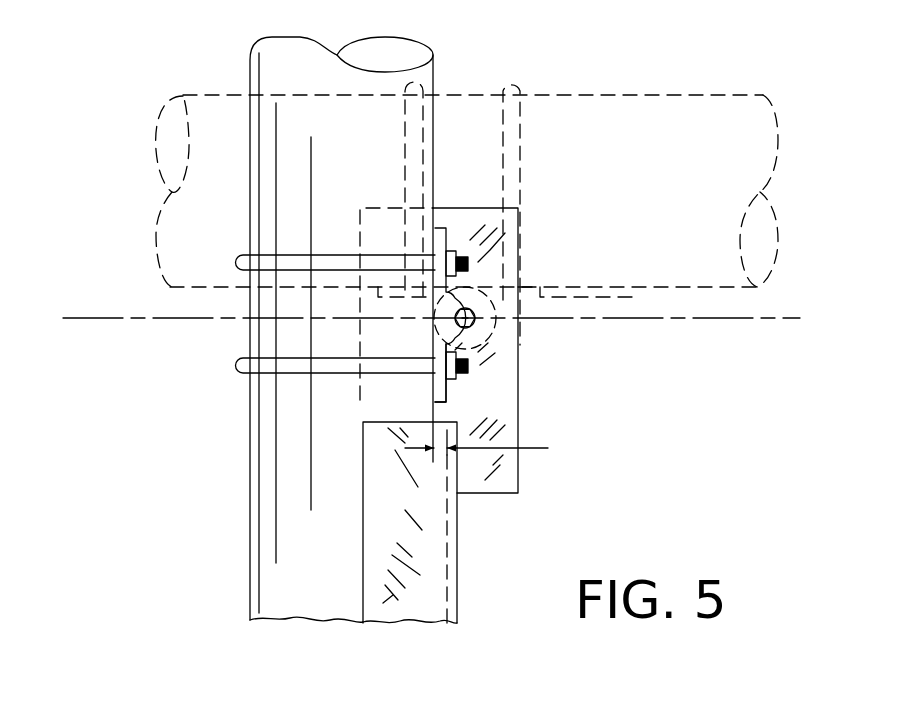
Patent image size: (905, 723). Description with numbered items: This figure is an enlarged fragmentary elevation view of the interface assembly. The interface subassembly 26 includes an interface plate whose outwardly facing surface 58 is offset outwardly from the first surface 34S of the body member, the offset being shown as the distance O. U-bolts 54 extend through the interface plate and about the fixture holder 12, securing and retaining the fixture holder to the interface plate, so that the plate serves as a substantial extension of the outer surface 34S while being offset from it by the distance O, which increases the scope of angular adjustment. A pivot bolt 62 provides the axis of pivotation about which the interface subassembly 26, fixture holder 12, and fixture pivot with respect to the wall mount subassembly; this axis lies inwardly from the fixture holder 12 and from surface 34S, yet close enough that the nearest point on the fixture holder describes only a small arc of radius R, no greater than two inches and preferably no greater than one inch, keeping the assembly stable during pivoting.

The fixture holder 12 is at (250, 470).
The U-bolts 54 is at (268, 368).
The outwardly facing surface 58 is at (433, 240).
The interface subassembly 26 is at (433, 388).
The pivot bolt 62 is at (468, 317).
The radius R is at (481, 332).
The offset distance O is at (491, 448).
The first surface of the body member 34S is at (447, 583).